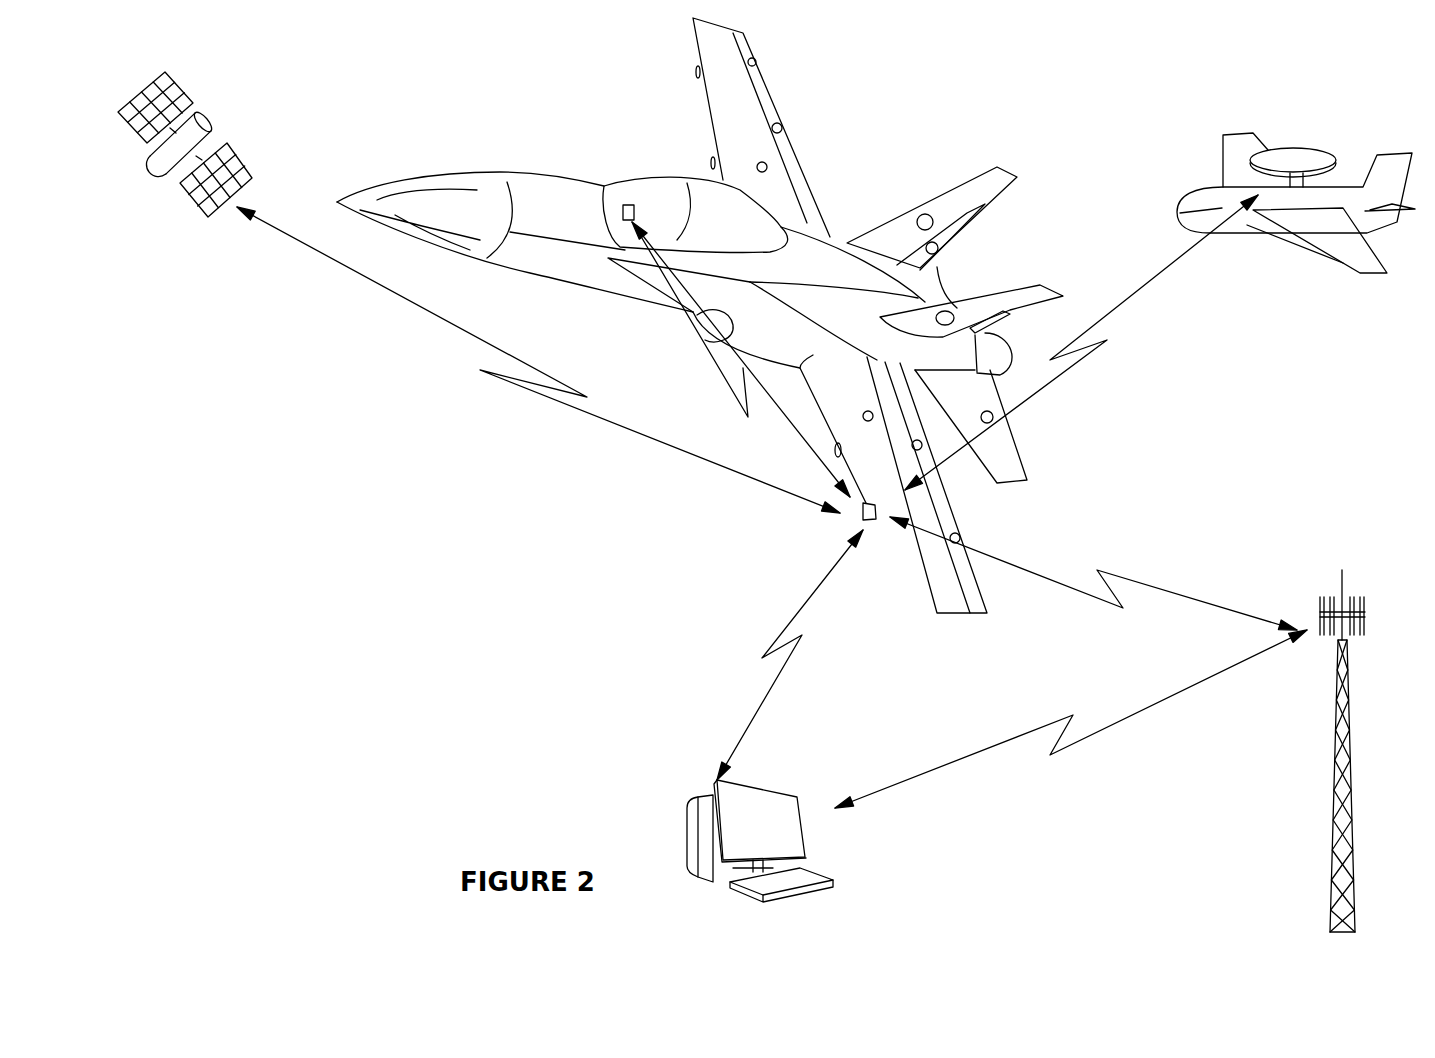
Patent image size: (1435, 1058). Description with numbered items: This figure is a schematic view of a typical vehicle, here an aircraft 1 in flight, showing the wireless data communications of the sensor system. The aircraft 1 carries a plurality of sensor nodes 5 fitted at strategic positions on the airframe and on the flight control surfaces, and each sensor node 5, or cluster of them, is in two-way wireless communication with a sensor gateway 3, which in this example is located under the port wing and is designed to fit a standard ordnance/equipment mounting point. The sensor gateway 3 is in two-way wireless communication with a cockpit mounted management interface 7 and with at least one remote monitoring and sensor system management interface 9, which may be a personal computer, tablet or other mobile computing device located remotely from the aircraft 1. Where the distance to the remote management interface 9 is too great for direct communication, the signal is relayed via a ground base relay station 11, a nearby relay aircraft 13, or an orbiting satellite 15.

The aircraft 1 is at (523, 137).
The sensor gateway 3 is at (860, 523).
The sensor nodes 5 is at (755, 60).
The cockpit mounted management interface 7 is at (628, 205).
The remote monitoring and sensor system management interface 9 is at (683, 803).
The ground base relay station 11 is at (1352, 697).
The relay aircraft 13 is at (1195, 178).
The orbiting satellite 15 is at (220, 117).